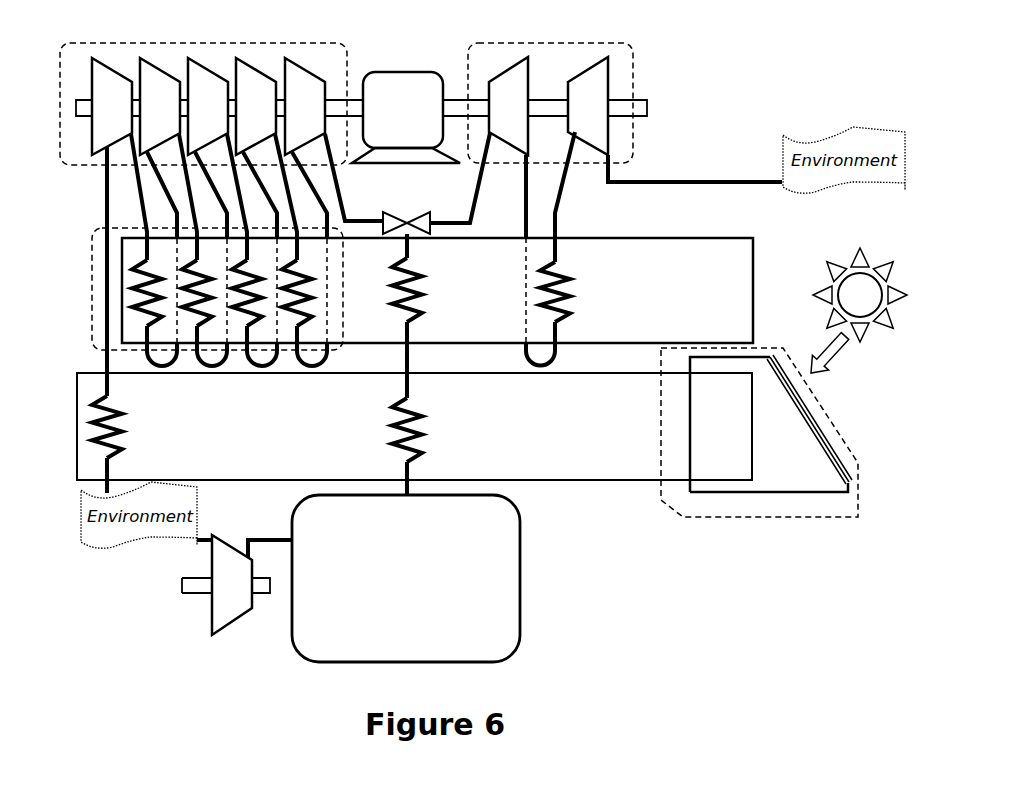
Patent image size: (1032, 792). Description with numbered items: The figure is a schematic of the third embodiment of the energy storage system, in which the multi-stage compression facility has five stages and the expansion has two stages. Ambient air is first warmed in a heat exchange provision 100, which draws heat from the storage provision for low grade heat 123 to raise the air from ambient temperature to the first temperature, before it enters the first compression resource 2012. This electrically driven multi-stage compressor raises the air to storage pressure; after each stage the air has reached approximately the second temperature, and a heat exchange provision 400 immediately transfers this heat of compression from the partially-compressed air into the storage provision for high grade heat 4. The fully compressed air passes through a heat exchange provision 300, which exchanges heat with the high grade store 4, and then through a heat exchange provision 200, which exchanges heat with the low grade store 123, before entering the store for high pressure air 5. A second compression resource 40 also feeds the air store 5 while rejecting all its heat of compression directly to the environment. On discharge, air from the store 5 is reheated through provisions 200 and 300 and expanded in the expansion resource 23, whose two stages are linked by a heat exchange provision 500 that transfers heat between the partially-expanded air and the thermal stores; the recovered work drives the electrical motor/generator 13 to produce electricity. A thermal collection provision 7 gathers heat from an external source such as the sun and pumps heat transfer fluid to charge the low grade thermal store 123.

The first compression resource 2012 is at (168, 43).
The electrical motor/generator 13 is at (403, 72).
The expansion resource 23 is at (557, 43).
The heat exchange provision 400 is at (92, 245).
The heat exchange provision 300 is at (427, 298).
The heat exchange provision 500 is at (553, 263).
The storage provision for high grade heat 4 is at (672, 233).
The heat exchange provision 100 is at (92, 418).
The heat exchange provision 200 is at (422, 458).
The storage provision for low grade heat 123 is at (613, 481).
The thermal collection provision 7 is at (753, 517).
The second compression resource 40 is at (225, 542).
The store for high pressure air 5 is at (295, 647).